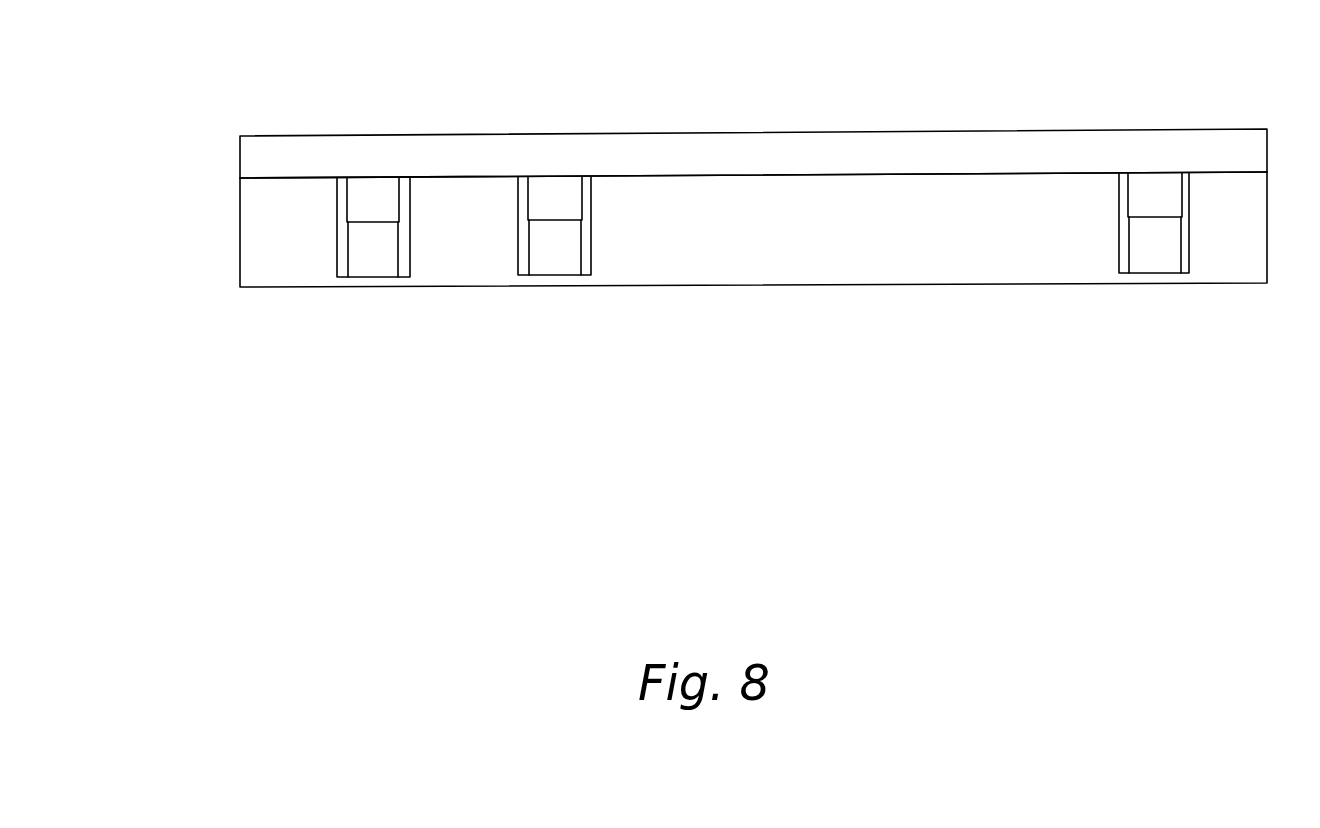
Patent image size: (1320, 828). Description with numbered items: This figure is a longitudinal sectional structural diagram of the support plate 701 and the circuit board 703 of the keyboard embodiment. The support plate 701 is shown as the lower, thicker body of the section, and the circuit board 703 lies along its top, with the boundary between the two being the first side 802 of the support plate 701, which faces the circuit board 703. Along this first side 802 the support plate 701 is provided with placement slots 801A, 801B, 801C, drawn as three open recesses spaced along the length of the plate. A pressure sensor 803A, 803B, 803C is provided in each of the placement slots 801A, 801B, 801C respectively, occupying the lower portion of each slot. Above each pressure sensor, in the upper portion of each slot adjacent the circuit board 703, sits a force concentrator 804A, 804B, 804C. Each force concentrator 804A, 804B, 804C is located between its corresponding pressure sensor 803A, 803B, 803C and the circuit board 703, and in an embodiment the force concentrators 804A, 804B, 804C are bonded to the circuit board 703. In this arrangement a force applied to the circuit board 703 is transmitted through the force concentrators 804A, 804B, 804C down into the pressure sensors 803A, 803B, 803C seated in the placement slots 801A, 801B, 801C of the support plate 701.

The support plate 701 is at (990, 129).
The circuit board 703 is at (265, 148).
The first side of the support plate 802 is at (877, 174).
The placement slot 801A is at (403, 270).
The placement slot 801B is at (583, 270).
The placement slot 801C is at (1119, 262).
The pressure sensor 803A is at (355, 265).
The pressure sensor 803B is at (535, 270).
The pressure sensor 803C is at (1157, 263).
The force concentrator 804A is at (355, 197).
The force concentrator 804B is at (557, 187).
The force concentrator 804C is at (1156, 180).